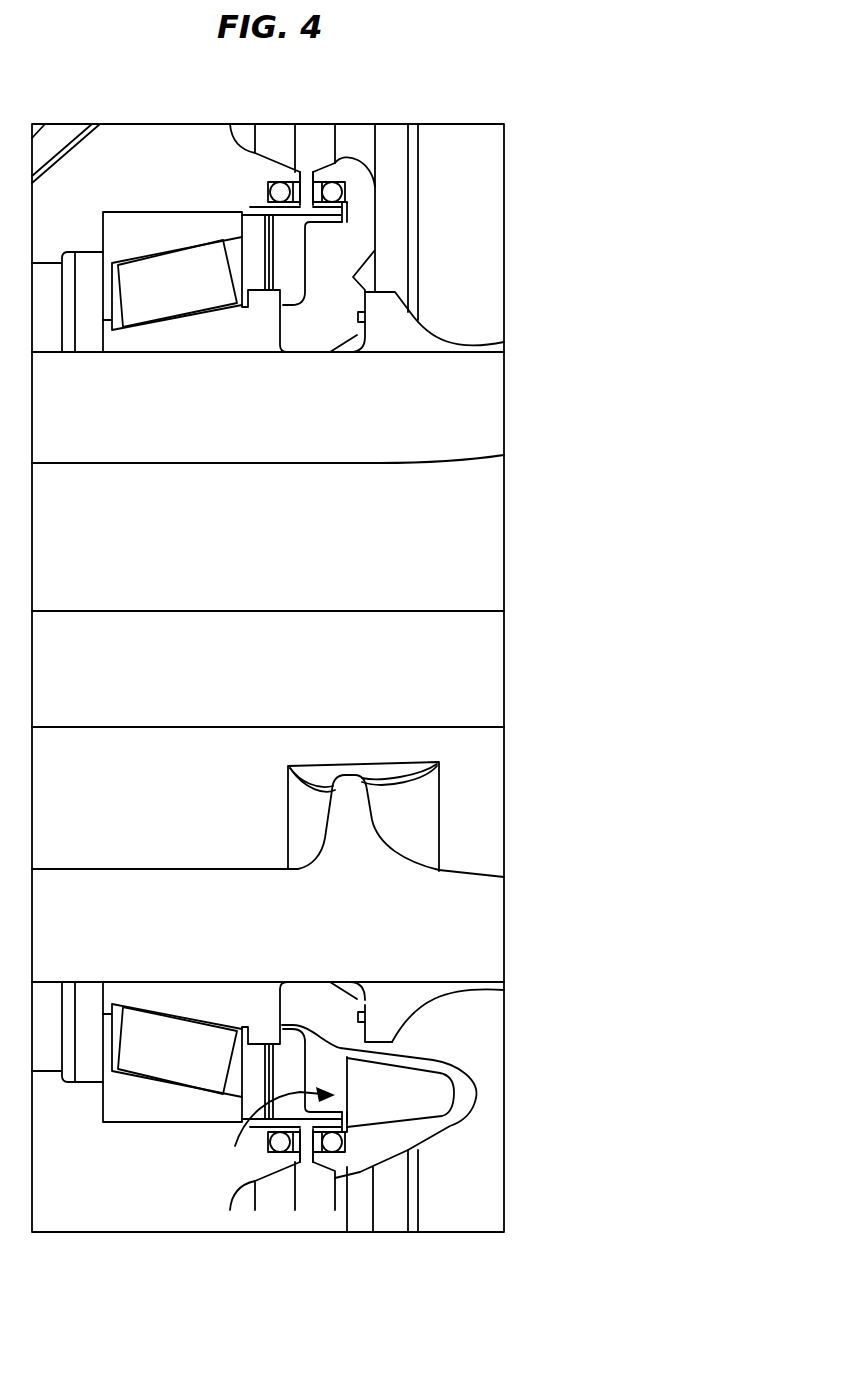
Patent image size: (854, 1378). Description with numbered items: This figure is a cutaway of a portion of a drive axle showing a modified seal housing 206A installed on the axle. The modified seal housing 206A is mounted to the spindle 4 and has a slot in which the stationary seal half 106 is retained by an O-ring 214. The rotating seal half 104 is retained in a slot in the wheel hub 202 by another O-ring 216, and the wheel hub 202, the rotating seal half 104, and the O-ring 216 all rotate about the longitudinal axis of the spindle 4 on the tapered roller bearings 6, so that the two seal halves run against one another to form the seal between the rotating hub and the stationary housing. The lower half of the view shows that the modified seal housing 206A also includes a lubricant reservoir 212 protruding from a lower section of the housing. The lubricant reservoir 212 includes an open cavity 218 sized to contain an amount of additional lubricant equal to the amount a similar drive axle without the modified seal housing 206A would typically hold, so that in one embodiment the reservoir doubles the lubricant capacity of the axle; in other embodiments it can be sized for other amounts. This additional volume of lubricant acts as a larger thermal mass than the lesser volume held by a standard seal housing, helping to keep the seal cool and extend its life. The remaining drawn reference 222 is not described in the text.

The spindle 4 is at (495, 387).
The tapered roller bearings 6 is at (178, 297).
The rotating seal half 104 is at (280, 211).
The stationary seal half 106 is at (307, 198).
The wheel hub 202 is at (107, 182).
The modified seal housing 206A is at (358, 230).
The lubricant reservoir 212 is at (462, 1098).
The O-ring 214 is at (340, 182).
The O-ring 216 is at (268, 188).
The open cavity 218 is at (275, 1131).
The shaft section 222 is at (495, 665).